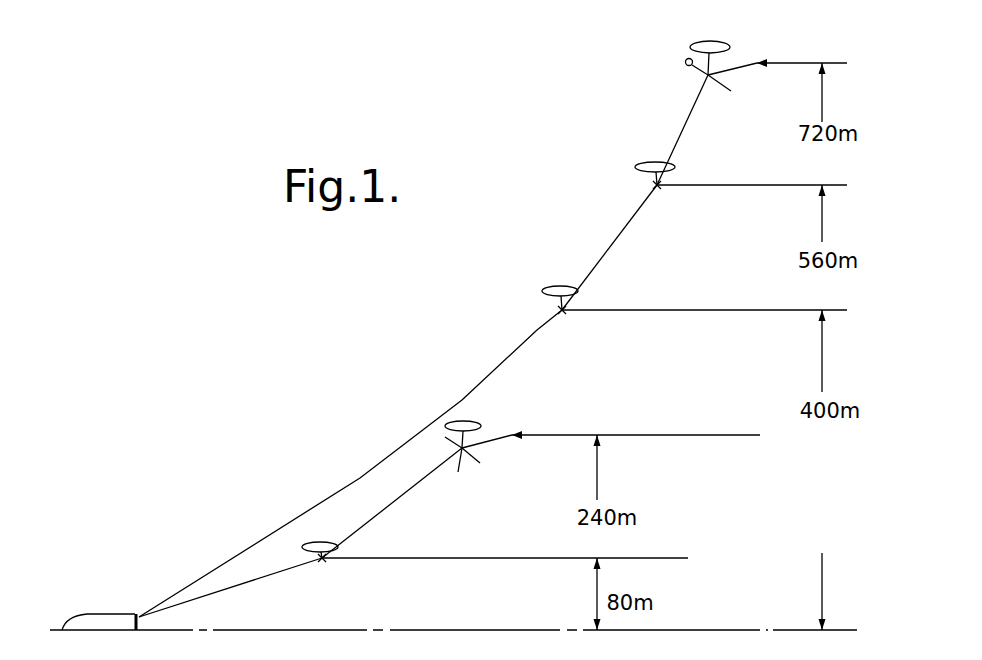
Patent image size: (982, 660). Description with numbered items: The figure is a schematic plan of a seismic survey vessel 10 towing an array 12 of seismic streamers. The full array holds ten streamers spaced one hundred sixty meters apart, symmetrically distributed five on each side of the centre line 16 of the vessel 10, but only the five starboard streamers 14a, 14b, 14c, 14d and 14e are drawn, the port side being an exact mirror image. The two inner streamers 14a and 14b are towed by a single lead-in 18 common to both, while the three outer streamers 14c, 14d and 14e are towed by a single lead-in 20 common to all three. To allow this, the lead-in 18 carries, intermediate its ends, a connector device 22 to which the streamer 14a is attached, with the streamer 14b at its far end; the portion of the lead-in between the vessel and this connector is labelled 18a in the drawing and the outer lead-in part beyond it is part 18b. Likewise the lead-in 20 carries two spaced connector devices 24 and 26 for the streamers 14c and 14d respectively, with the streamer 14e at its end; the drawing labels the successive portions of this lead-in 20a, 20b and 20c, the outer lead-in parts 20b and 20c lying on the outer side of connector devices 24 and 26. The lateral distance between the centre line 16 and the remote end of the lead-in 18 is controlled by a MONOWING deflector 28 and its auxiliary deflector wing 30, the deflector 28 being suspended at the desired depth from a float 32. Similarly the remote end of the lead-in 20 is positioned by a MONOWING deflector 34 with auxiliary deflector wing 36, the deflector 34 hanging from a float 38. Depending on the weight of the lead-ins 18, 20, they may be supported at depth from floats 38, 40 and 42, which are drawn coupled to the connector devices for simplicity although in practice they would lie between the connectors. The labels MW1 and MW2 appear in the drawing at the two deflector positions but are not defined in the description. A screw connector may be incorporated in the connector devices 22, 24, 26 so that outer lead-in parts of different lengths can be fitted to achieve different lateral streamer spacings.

The seismic survey vessel 10 is at (104, 613).
The array of seismic streamers 12 is at (666, 380).
The inner streamer 14a is at (675, 560).
The inner streamer 14b is at (693, 437).
The outer streamer 14c is at (777, 312).
The outer streamer 14d is at (750, 187).
The outer streamer 14e is at (807, 62).
The centre line of the vessel 16 is at (484, 629).
The lead-in 18 is at (300, 520).
The first section of lower tether cable 18a is at (287, 573).
The outer lead-in part 18b is at (380, 520).
The lead-in 20 is at (423, 346).
The first section of upper tether cable 20a is at (530, 337).
The outer lead-in part 20b is at (612, 246).
The outer lead-in part 20c is at (677, 132).
The connector device 22 is at (324, 560).
The connector device 24 is at (564, 312).
The connector device 26 is at (659, 187).
The MONOWING deflector 28 is at (478, 456).
The auxiliary deflector wing 30 is at (515, 431).
The float 32 is at (469, 421).
The MONOWING deflector 34 is at (716, 88).
The auxiliary deflector wing 36 is at (760, 60).
The float 38 is at (308, 541).
The float 40 is at (553, 287).
The float 42 is at (640, 164).
The upper measuring/weather sensor node MW1 is at (684, 64).
The lower measuring/weather sensor node MW2 is at (479, 469).